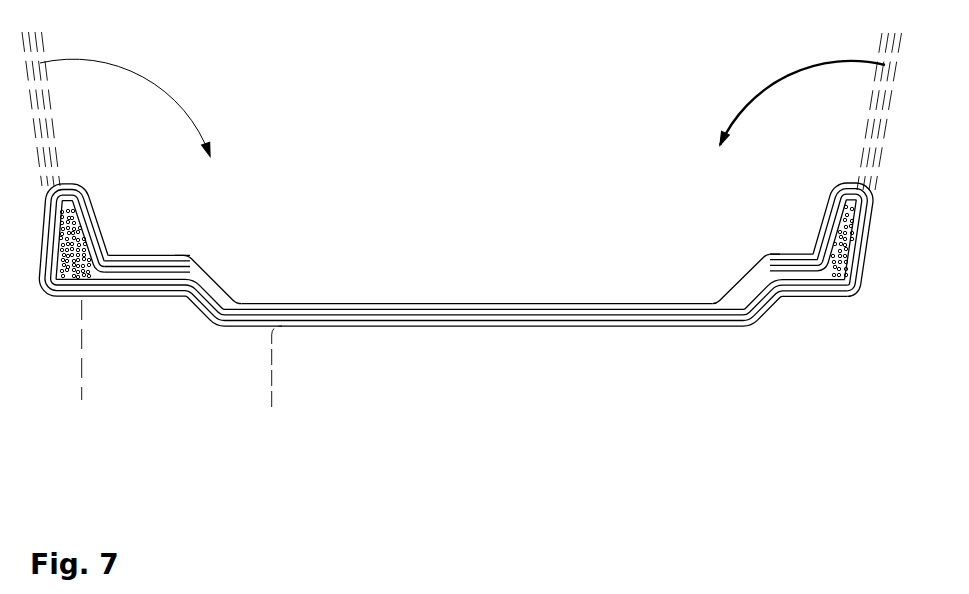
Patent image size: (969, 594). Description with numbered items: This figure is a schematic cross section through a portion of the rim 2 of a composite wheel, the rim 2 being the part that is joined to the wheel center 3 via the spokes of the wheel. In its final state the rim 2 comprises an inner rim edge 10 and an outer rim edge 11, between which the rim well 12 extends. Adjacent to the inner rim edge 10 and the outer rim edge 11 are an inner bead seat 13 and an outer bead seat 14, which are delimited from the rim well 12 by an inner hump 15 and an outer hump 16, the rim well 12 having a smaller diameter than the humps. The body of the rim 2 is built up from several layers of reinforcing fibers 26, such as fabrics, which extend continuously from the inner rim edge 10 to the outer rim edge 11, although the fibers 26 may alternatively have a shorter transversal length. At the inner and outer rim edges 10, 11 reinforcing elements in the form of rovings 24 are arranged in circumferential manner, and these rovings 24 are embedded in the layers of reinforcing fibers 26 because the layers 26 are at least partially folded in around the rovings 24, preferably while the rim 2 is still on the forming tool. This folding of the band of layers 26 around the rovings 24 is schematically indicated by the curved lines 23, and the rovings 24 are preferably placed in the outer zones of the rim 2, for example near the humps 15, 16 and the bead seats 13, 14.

The rim 2 is at (469, 245).
The wheel center 3 is at (317, 396).
The inner rim edge 10 is at (809, 160).
The outer rim edge 11 is at (112, 160).
The rim well 12 is at (516, 372).
The inner bead seat 13 is at (713, 148).
The outer bead seat 14 is at (214, 148).
The inner hump 15 is at (658, 164).
The outer hump 16 is at (286, 164).
The lines 23 is at (462, 90).
The rovings 24 is at (479, 335).
The layers of reinforcing fibers 26 is at (462, 245).